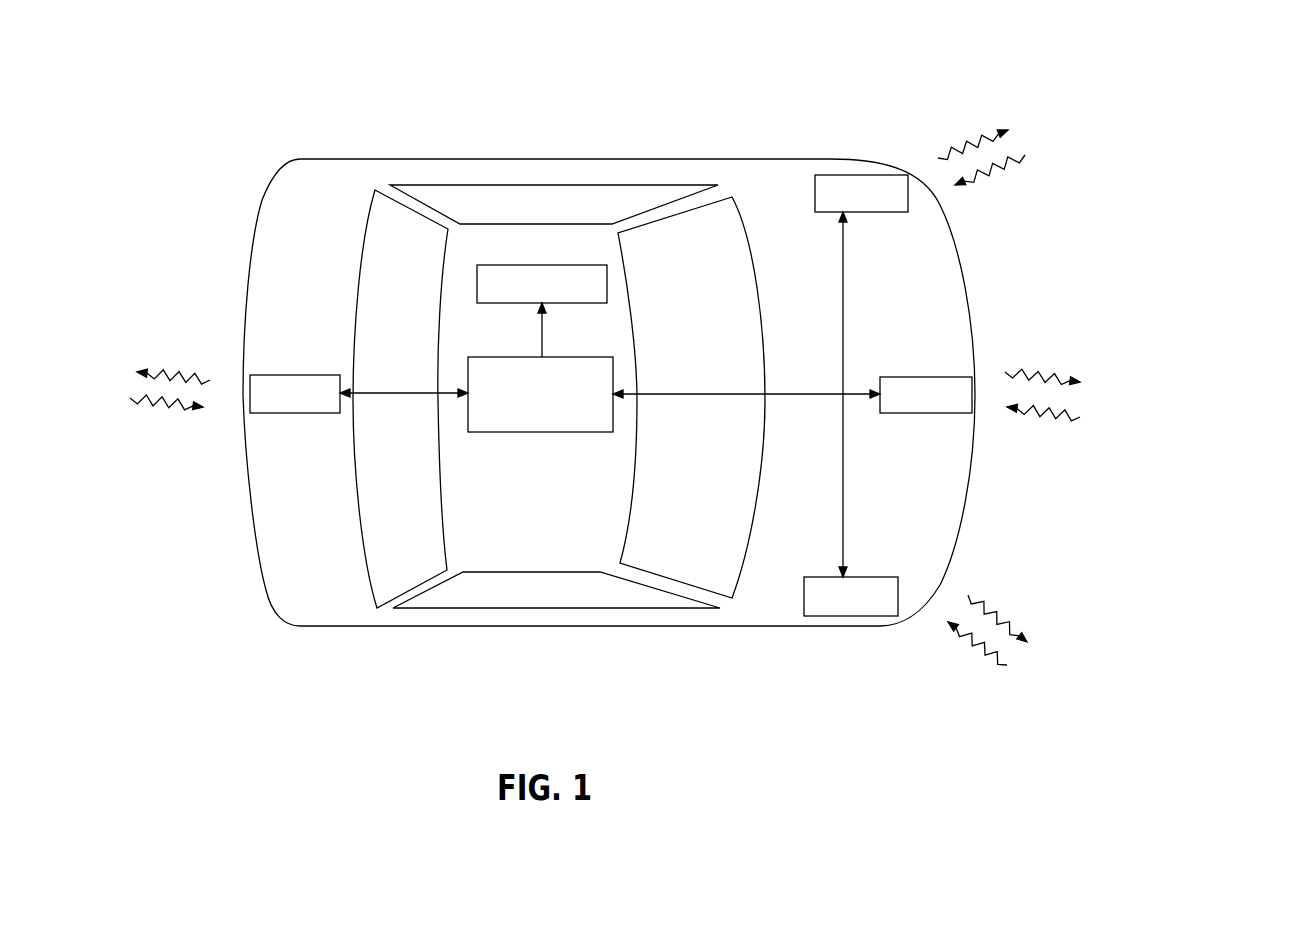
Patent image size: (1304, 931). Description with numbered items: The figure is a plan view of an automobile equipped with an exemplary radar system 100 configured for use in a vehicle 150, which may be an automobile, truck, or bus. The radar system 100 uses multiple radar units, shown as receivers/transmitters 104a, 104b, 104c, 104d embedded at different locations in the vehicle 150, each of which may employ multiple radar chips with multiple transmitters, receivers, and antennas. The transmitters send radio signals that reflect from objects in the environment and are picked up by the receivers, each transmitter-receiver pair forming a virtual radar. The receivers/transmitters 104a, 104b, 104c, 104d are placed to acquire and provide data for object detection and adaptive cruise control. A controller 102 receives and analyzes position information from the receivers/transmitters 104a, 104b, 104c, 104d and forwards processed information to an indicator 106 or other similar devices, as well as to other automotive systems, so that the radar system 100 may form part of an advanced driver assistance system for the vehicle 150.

The radar system 100 is at (383, 265).
The vehicle 150 is at (424, 160).
The controller 102 is at (493, 432).
The indicator 106 is at (503, 265).
The receiver/transmitter 104a is at (258, 375).
The receiver/transmitter 104b is at (828, 175).
The receiver/transmitter 104c is at (883, 377).
The receiver/transmitter 104d is at (855, 576).